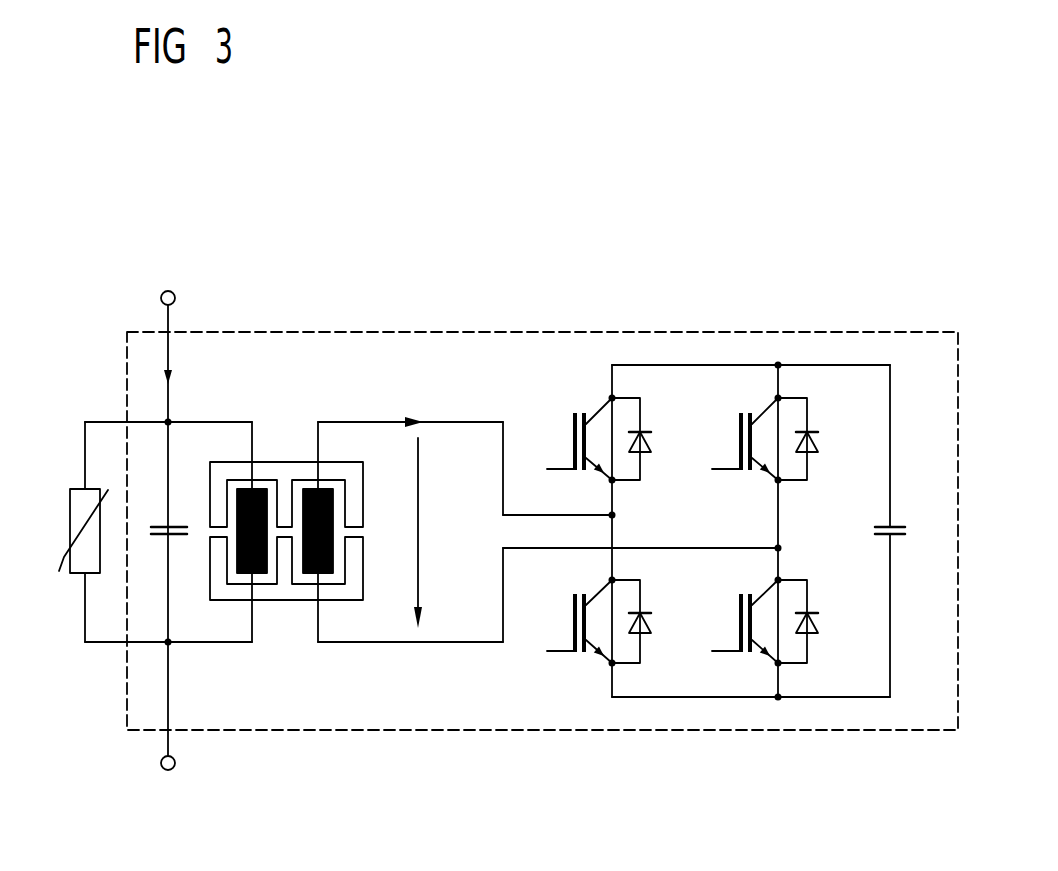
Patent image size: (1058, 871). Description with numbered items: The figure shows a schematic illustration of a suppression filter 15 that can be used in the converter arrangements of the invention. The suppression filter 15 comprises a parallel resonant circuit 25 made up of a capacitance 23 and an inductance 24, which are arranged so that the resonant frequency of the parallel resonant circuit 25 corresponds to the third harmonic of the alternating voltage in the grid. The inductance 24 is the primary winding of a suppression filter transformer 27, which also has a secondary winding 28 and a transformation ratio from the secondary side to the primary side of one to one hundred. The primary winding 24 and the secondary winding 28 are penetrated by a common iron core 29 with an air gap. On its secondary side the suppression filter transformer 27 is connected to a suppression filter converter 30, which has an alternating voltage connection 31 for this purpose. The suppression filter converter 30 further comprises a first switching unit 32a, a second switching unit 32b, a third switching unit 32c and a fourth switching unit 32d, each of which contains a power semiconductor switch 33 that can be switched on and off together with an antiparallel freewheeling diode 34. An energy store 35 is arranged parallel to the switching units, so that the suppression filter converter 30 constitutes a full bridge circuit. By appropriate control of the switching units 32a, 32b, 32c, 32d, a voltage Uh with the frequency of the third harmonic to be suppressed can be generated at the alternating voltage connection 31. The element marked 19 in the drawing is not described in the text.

The suppression filter 15 is at (898, 332).
The varistor 19 is at (70, 508).
The capacitance 23 is at (160, 538).
The inductance 24 is at (260, 576).
The parallel resonant circuit 25 is at (296, 579).
The suppression filter transformer 27 is at (280, 436).
The secondary winding 28 is at (313, 577).
The common iron core 29 is at (357, 581).
The suppression filter converter 30 is at (733, 557).
The alternating voltage connection 31 is at (506, 531).
The first switching unit 32a is at (585, 384).
The second switching unit 32b is at (586, 681).
The third switching unit 32c is at (755, 384).
The fourth switching unit 32d is at (756, 681).
The power semiconductor switch 33 is at (573, 444).
The antiparallel freewheeling diode 34 is at (644, 452).
The energy store 35 is at (896, 537).